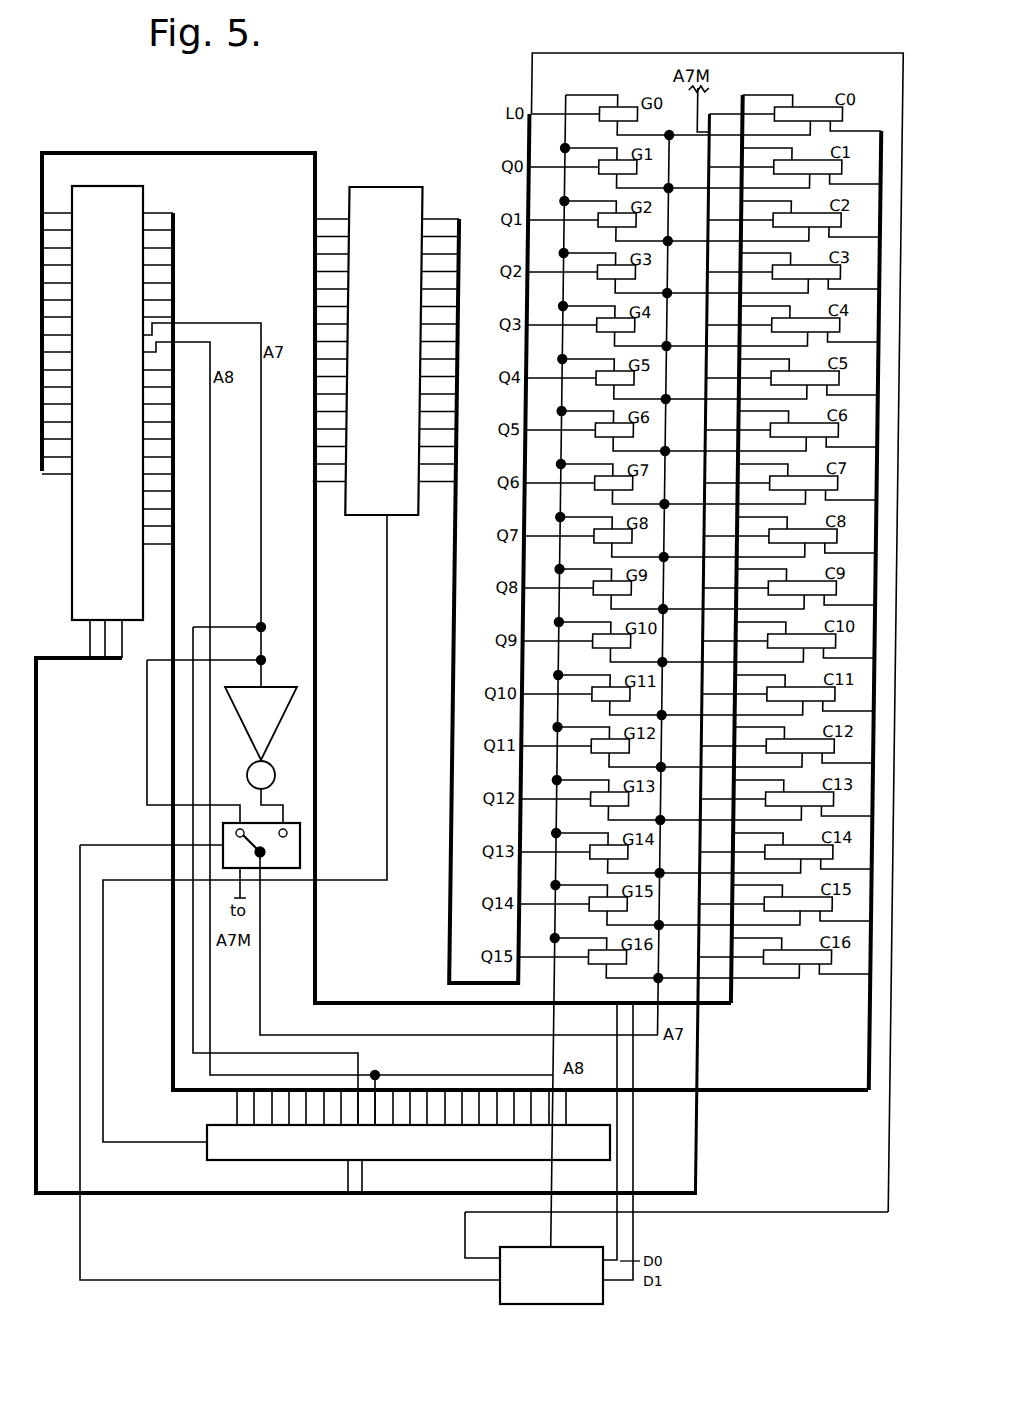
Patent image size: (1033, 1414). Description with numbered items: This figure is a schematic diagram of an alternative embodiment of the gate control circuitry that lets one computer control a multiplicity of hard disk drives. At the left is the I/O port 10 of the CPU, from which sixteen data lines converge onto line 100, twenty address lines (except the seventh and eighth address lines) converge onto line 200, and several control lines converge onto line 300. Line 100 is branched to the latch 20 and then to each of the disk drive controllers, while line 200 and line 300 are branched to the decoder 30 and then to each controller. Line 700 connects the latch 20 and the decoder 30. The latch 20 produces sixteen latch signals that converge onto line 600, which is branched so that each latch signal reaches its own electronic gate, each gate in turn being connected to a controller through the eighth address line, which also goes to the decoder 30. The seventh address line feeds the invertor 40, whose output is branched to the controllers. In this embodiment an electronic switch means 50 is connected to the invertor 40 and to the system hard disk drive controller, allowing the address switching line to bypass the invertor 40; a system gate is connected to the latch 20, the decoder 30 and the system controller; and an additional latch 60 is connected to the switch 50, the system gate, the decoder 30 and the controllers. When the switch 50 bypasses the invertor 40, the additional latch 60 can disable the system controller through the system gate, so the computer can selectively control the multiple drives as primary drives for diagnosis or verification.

The I/O port of a CPU 10 is at (118, 587).
The latch 20 is at (400, 211).
The decoder 30 is at (531, 1156).
The invertor 40 is at (274, 713).
The electronic switch means 50 is at (296, 866).
The additional latch means 60 is at (559, 1284).
The line 100 is at (409, 550).
The line 200 is at (502, 625).
The line 300 is at (372, 654).
The line 600 is at (468, 548).
The line 700 is at (245, 828).